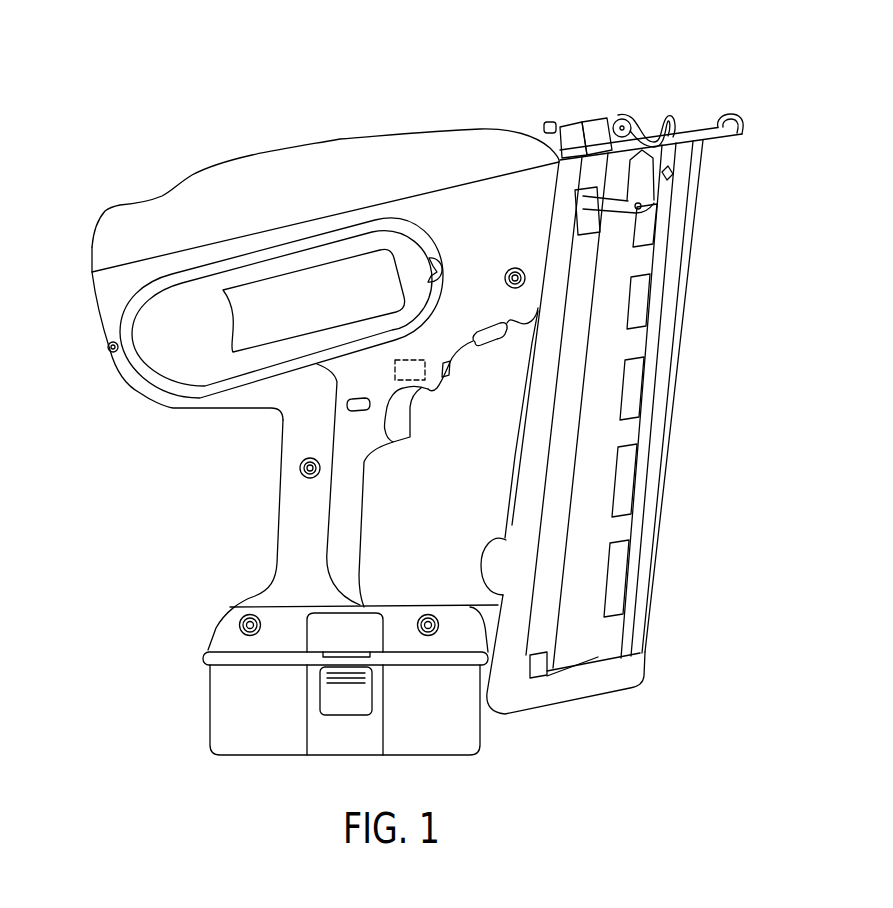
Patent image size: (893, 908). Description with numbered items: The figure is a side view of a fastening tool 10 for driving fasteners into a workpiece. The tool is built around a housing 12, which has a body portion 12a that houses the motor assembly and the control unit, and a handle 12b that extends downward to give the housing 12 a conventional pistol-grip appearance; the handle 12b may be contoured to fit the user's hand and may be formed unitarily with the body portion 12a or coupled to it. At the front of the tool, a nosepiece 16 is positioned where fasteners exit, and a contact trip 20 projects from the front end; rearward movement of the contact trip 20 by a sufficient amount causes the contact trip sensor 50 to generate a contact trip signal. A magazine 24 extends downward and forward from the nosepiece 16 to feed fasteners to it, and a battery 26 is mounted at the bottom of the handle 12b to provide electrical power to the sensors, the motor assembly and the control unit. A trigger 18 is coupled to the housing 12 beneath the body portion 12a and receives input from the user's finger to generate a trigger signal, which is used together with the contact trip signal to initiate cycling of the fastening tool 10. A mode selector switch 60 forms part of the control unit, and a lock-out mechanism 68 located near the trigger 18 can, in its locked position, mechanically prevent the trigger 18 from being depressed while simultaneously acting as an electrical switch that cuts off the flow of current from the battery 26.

The fastening tool 10 is at (400, 400).
The housing 12 is at (308, 371).
The body portion 12a is at (385, 149).
The handle 12b is at (288, 513).
The nosepiece 16 is at (594, 122).
The trigger 18 is at (402, 430).
The contact trip 20 is at (706, 104).
The magazine 24 is at (612, 380).
The battery 26 is at (222, 744).
The contact trip sensor 50 is at (422, 380).
The mode selector switch 60 is at (497, 336).
The lock-out mechanism 68 is at (347, 405).